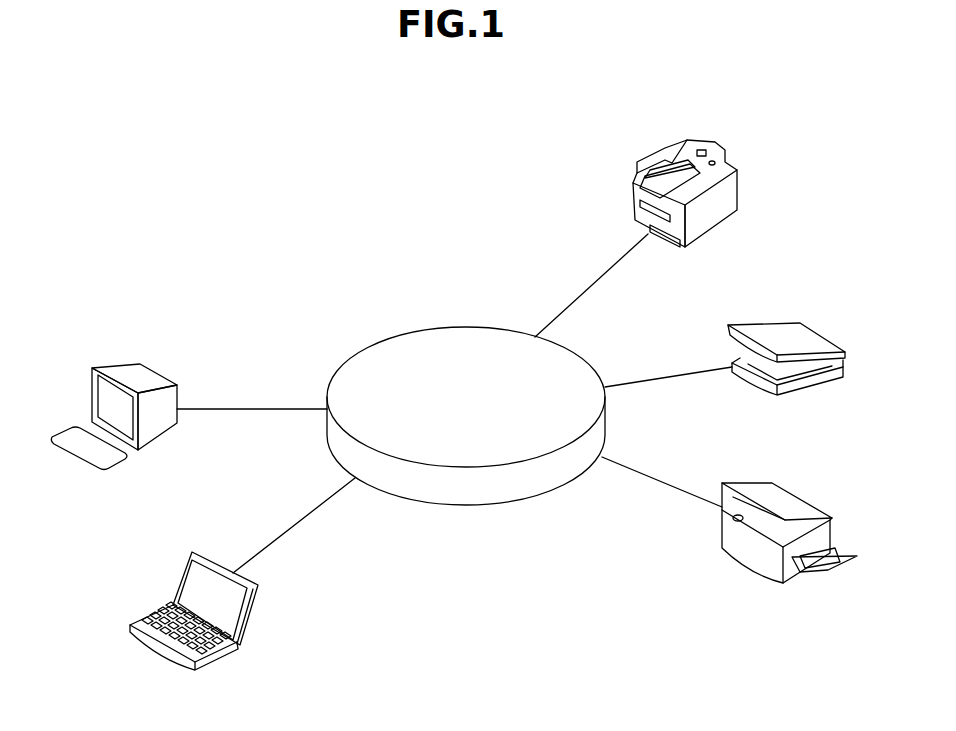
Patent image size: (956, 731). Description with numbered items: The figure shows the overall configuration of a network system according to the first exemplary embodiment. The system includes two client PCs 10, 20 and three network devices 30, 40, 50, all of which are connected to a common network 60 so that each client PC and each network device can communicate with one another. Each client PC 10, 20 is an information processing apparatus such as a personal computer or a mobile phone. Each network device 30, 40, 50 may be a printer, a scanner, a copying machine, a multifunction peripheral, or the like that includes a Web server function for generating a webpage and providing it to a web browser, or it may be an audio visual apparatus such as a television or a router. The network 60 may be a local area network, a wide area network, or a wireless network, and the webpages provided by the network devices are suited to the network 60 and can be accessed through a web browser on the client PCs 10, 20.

The client PC 10 is at (114, 392).
The client PC 20 is at (194, 586).
The network device 30 is at (690, 166).
The network device 40 is at (783, 332).
The network device 50 is at (789, 505).
The network 60 is at (422, 328).